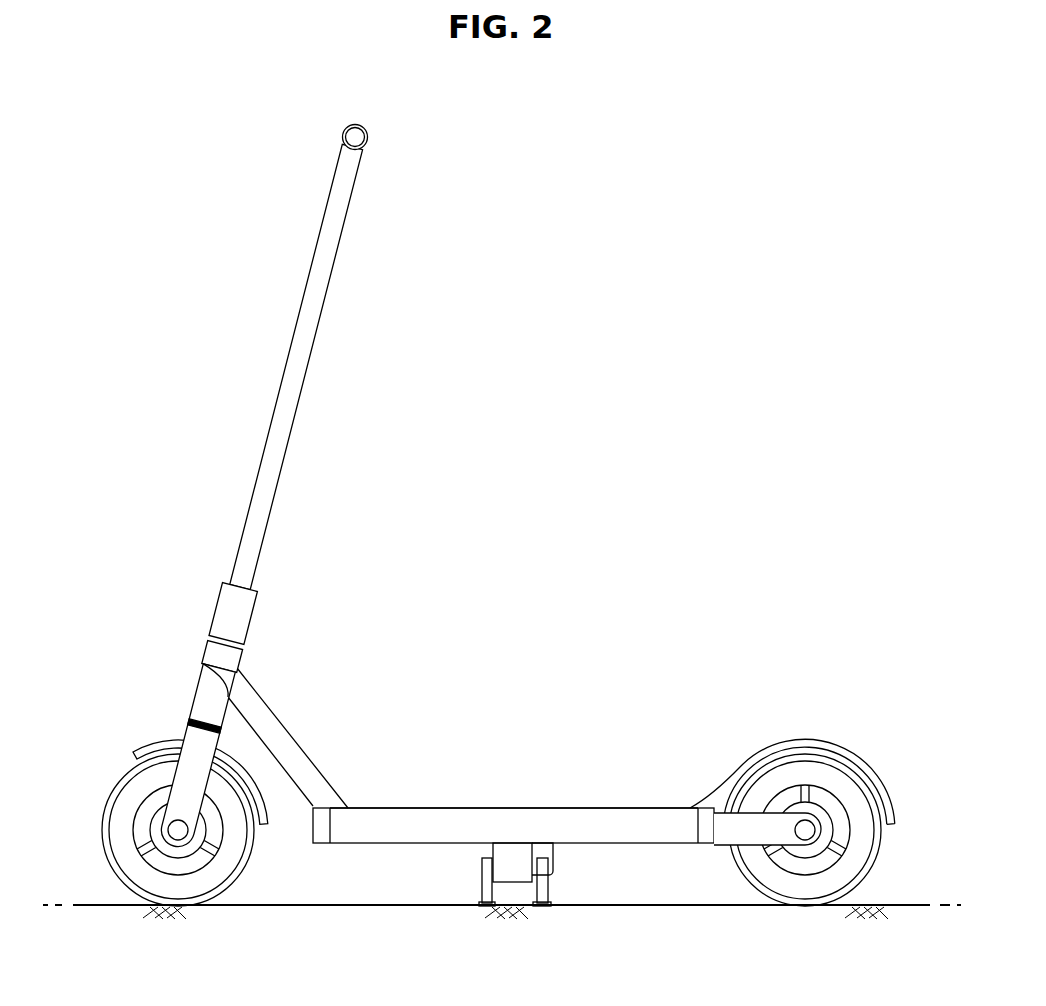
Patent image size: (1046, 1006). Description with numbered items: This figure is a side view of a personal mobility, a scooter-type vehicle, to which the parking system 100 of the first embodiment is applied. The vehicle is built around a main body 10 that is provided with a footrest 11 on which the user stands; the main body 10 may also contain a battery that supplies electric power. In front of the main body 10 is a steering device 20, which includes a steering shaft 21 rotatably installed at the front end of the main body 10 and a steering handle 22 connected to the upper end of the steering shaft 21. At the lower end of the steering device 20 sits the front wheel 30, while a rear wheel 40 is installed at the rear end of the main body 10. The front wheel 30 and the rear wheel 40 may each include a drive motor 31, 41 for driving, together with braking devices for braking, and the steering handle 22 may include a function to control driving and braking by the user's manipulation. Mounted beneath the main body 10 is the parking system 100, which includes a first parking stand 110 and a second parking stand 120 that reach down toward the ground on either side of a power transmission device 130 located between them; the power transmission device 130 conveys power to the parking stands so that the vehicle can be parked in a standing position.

The main body 10 is at (524, 756).
The footrest 11 is at (546, 808).
The steering device 20 is at (269, 482).
The steering shaft 21 is at (300, 391).
The steering handle 22 is at (343, 137).
The front wheel 30 is at (156, 820).
The drive motor 31 is at (157, 825).
The rear wheel 40 is at (811, 808).
The drive motor 41 is at (827, 833).
The parking system 100 is at (489, 913).
The first parking stand 110 is at (483, 890).
The second parking stand 120 is at (545, 890).
The power transmission device 130 is at (515, 889).